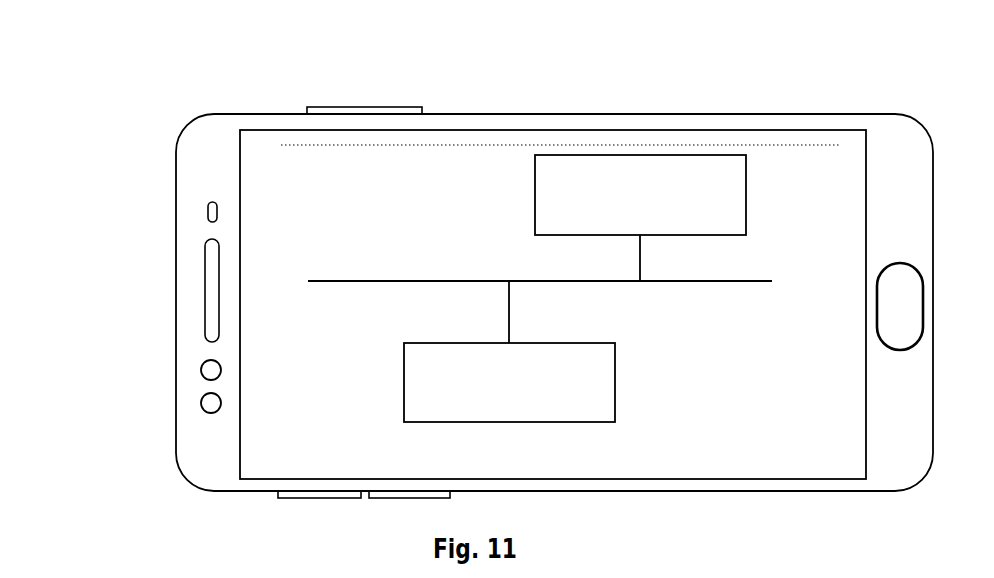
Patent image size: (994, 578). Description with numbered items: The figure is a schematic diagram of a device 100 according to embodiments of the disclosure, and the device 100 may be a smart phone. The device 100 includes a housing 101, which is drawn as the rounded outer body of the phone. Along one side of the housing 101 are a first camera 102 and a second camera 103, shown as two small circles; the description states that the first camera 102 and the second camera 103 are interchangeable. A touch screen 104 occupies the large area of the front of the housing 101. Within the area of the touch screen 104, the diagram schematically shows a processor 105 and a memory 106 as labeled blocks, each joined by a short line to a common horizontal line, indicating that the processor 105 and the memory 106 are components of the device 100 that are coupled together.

The device 100 is at (233, 40).
The housing 101 is at (554, 266).
The first camera 102 is at (138, 307).
The second camera 103 is at (131, 367).
The touch screen 104 is at (559, 262).
The processor 105 is at (640, 218).
The memory 106 is at (509, 351).